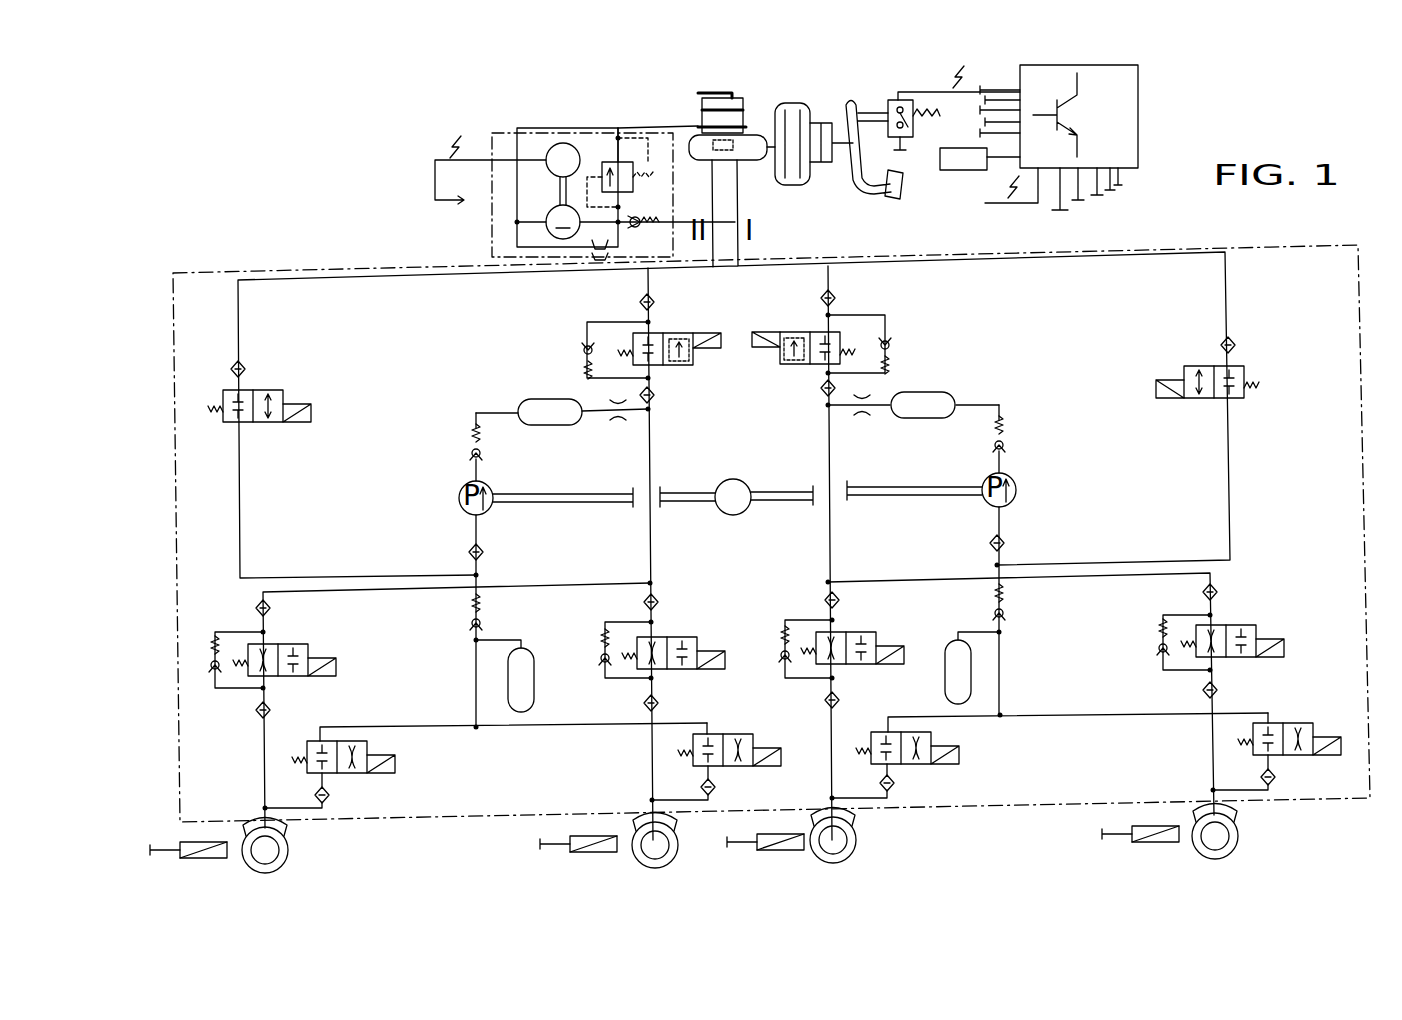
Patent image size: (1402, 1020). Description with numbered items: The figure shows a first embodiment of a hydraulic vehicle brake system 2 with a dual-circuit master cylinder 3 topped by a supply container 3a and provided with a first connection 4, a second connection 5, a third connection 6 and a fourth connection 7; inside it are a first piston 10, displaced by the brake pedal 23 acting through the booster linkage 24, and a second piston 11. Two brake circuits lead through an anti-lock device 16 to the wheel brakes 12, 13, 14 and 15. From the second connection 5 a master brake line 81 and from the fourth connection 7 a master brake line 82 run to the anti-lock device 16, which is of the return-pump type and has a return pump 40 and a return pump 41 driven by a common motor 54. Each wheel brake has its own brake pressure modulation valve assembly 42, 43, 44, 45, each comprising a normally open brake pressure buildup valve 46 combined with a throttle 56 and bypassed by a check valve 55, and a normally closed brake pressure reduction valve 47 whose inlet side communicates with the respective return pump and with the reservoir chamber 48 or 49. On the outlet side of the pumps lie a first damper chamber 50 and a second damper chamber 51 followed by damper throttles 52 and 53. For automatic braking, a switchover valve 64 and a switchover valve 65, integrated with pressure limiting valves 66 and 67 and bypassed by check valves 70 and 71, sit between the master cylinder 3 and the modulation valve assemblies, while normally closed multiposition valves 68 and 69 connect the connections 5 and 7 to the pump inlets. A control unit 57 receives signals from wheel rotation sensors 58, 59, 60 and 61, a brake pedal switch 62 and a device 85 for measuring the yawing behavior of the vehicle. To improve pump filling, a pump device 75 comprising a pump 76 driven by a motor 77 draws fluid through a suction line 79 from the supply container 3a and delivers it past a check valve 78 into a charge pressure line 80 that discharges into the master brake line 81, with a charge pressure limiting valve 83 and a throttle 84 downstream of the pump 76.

The hydraulic vehicle brake system 2 is at (322, 147).
The dual-circuit master cylinder 3 is at (762, 165).
The supply container 3a is at (748, 135).
The first connection 4 is at (763, 140).
The second connection 5 is at (738, 178).
The third connection 6 is at (700, 130).
The fourth connection 7 is at (710, 157).
The first piston 10 is at (787, 128).
The second piston 11 is at (712, 98).
The wheel brake 12 is at (1236, 815).
The wheel brake 13 is at (855, 818).
The wheel brake 14 is at (648, 822).
The wheel brake 15 is at (258, 826).
The anti-lock device 16 is at (170, 380).
The brake pedal 23 is at (904, 190).
The pedal push rod 24 is at (808, 172).
The return pump 40 is at (1016, 490).
The return pump 41 is at (460, 495).
The brake pressure modulation valve assembly 42 is at (1292, 692).
The brake pressure modulation valve assembly 43 is at (885, 696).
The brake pressure modulation valve assembly 44 is at (719, 710).
The brake pressure modulation valve assembly 45 is at (344, 712).
The brake pressure buildup valve 46 is at (270, 678).
The brake pressure reduction valve 47 is at (328, 775).
The reservoir chamber 48 is at (965, 675).
The reservoir chamber 49 is at (528, 668).
The first damper chamber 50 is at (950, 395).
The second damper chamber 51 is at (532, 400).
The damper throttle 52 is at (862, 418).
The damper throttle 53 is at (620, 422).
The motor 54 is at (740, 480).
The check valve 55 is at (210, 667).
The throttle 56 is at (248, 640).
The control unit 57 is at (1122, 90).
The wheel rotation sensor 58 is at (1148, 826).
The wheel rotation sensor 59 is at (770, 835).
The wheel rotation sensor 60 is at (583, 836).
The wheel rotation sensor 61 is at (195, 845).
The brake pedal switch 62 is at (890, 100).
The switchover valve 64 is at (842, 333).
The switchover valve 65 is at (633, 340).
The pressure limiting valve 66 is at (797, 332).
The pressure limiting valve 67 is at (684, 366).
The controllable multiposition valve 68 is at (1183, 373).
The controllable multiposition valve 69 is at (285, 393).
The check valve 70 is at (893, 338).
The check valve 71 is at (582, 345).
The pump device 75 is at (443, 208).
The pump 76 is at (550, 228).
The motor 77 is at (552, 170).
The check valve 78 is at (638, 226).
The suction line 79 is at (565, 128).
The charge pressure line 80 is at (734, 369).
The master brake line 81 is at (738, 225).
The master brake line 82 is at (712, 199).
The charge pressure limiting valve 83 is at (612, 160).
The throttle 84 is at (602, 262).
The device for measuring the yawing behavior 85 is at (965, 148).